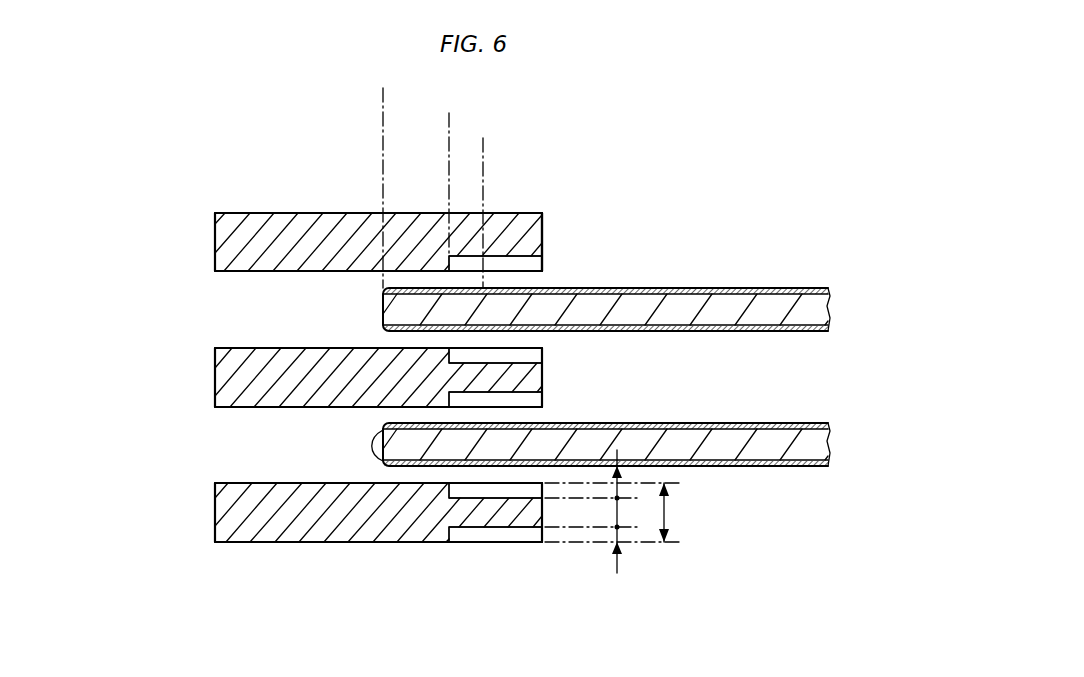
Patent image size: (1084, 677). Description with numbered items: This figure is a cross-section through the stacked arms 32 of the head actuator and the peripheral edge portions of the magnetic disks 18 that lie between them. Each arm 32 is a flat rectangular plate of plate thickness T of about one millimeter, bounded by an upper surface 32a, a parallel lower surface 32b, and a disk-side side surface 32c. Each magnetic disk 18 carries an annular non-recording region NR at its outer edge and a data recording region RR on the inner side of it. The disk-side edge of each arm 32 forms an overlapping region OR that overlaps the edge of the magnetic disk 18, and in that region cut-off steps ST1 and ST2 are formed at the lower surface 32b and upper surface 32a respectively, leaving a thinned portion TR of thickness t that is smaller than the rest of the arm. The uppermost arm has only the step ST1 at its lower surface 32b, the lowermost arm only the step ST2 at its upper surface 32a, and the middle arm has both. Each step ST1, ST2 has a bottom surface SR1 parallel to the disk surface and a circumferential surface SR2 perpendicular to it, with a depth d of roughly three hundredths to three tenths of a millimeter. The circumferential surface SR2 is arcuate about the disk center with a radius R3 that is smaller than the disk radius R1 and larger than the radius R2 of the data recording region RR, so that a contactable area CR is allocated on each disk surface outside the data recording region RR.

The arm 32 is at (222, 238).
The upper surface 32a is at (303, 213).
The lower surface 32b is at (248, 271).
The side surface 32c is at (545, 215).
The magnetic disk 18 is at (770, 300).
The overlapping region OR is at (428, 232).
The non-recording region NR is at (392, 289).
The contactable area CR is at (372, 445).
The thinned portion TR is at (545, 238).
The step ST1 is at (545, 266).
The step ST2 is at (520, 497).
The bottom surface SR1 is at (487, 493).
The circumferential surface SR2 is at (458, 500).
The data recording region RR is at (684, 288).
The disk radius R1 is at (385, 103).
The radius of the data recording region R2 is at (485, 153).
The radius of the circumferential surface R3 is at (451, 128).
The depth d is at (614, 505).
The thickness t is at (592, 513).
The plate thickness T is at (675, 512).